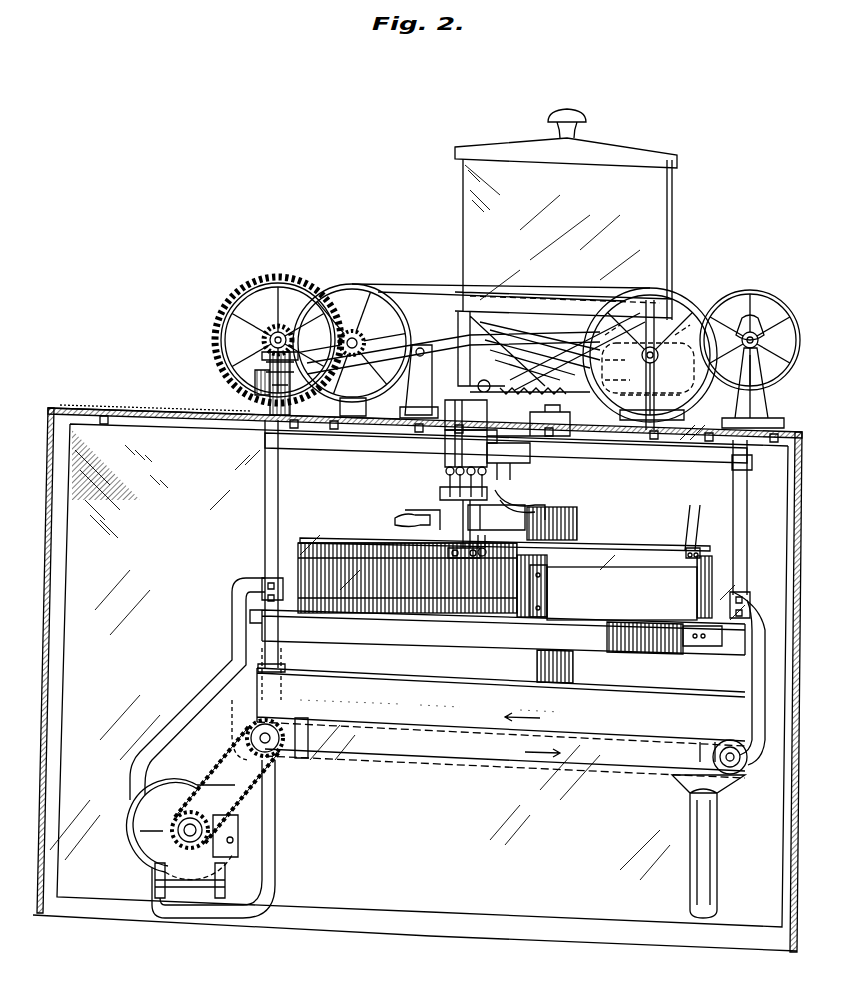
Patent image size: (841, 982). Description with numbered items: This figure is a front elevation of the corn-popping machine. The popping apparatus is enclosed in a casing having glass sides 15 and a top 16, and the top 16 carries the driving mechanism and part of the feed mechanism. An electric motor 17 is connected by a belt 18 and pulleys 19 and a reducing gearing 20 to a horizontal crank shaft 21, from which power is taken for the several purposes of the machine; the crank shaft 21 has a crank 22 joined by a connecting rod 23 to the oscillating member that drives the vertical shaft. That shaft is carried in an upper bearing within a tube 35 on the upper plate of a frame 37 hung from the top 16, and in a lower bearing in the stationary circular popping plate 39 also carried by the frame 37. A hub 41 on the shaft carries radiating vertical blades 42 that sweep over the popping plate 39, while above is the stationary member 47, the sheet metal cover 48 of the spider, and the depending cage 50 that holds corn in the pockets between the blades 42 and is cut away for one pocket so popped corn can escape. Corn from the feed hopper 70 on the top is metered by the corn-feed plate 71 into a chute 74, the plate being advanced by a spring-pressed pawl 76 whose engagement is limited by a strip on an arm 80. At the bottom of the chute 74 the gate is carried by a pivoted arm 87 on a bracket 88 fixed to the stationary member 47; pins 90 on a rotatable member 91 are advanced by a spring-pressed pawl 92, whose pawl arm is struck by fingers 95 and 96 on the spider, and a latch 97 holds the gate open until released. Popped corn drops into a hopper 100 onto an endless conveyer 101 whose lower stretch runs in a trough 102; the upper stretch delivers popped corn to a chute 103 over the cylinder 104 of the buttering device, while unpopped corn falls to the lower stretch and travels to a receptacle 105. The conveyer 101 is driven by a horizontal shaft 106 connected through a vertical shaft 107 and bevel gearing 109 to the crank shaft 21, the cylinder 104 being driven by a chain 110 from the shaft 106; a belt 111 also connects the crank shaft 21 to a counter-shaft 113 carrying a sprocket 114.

The glass sides 15 is at (58, 680).
The top 16 is at (146, 410).
The electric motor 17 is at (698, 296).
The belt 18 is at (392, 285).
The pulleys 19 is at (350, 284).
The reducing gearing 20 is at (290, 280).
The crank shaft 21 is at (266, 330).
The crank 22 is at (238, 400).
The connecting rod 23 is at (400, 383).
The tube 35 is at (532, 462).
The frame 37 is at (668, 462).
The popping plate 39 is at (655, 652).
The hub 41 is at (530, 612).
The blades 42 is at (614, 587).
The stationary member 47 is at (562, 510).
The cover 48 is at (614, 542).
The cage 50 is at (305, 541).
The hopper 70 is at (660, 228).
The corn-feed plate 71 is at (470, 392).
The chute 74 is at (441, 455).
The spring-pressed pawl 76 is at (452, 428).
The arm 80 is at (525, 436).
The pivoted arm 87 is at (448, 545).
The bracket 88 is at (535, 503).
The pins 90 is at (440, 494).
The rotatable member 91 is at (446, 482).
The spring-pressed pawl 92 is at (488, 508).
The finger 95 is at (697, 528).
The finger 96 is at (486, 552).
The latch 97 is at (395, 520).
The hopper 100 is at (501, 707).
The endless conveyer 101 is at (514, 748).
The trough 102 is at (455, 772).
The chute 103 is at (195, 720).
The cylinder 104 is at (157, 812).
The receptacle 105 is at (688, 842).
The horizontal shaft 106 is at (275, 756).
The vertical shaft 107 is at (265, 531).
The bevel gearing 109 is at (240, 356).
The chain 110 is at (258, 786).
The belt 111 is at (655, 285).
The counter-shaft 113 is at (760, 336).
The sprocket 114 is at (752, 318).